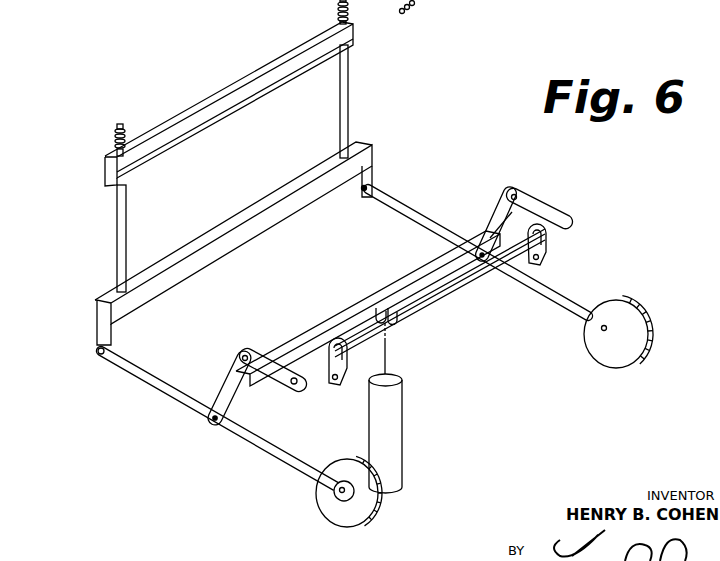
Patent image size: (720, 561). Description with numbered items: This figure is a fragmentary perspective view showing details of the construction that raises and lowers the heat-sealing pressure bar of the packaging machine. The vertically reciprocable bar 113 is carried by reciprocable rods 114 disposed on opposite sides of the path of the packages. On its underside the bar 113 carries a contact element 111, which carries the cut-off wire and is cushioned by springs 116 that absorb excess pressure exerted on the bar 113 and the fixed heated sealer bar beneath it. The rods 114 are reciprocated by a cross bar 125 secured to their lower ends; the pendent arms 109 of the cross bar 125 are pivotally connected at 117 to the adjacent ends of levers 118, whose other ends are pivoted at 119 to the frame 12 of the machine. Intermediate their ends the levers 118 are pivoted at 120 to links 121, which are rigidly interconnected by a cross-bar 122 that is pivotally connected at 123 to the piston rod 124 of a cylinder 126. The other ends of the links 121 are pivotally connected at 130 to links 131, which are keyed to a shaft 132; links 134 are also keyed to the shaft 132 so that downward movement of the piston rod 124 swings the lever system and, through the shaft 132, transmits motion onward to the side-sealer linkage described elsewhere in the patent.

The frame 12 is at (343, 517).
The pendent arms 109 is at (373, 176).
The contact element 111 is at (229, 121).
The vertically reciprocable bar 113 is at (218, 113).
The reciprocable rods 114 is at (349, 91).
The springs 116 is at (115, 141).
The pivot connection 117 is at (362, 193).
The levers 118 is at (426, 216).
The pivot 119 is at (335, 492).
The pivot 120 is at (212, 422).
The links 121 is at (229, 391).
The cross-bar 122 is at (416, 272).
The pivotal connection 123 is at (376, 314).
The piston rod 124 is at (388, 353).
The cross bar 125 is at (234, 226).
The cylinder 126 is at (403, 417).
The pivot connection 130 is at (244, 355).
The links 131 is at (274, 365).
The shaft 132 is at (449, 289).
The links 134 is at (342, 386).